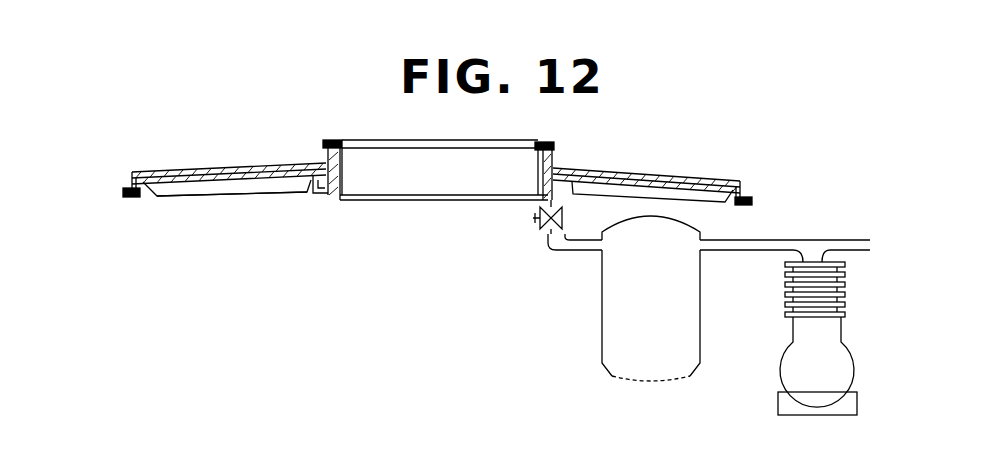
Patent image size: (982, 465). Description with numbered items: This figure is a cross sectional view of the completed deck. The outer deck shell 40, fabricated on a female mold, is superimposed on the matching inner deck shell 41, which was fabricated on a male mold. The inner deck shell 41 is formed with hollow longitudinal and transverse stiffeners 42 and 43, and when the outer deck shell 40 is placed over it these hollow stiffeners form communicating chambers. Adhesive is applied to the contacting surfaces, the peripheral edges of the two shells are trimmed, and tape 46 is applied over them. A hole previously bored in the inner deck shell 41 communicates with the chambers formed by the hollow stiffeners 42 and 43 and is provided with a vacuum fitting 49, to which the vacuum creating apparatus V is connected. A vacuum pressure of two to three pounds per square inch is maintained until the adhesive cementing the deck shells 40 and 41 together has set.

The outer deck shell 40 is at (220, 167).
The inner deck shell 41 is at (208, 182).
The longitudinal stiffener 42 is at (323, 181).
The transverse stiffener 43 is at (258, 193).
The tape 46 is at (132, 200).
The vacuum fitting 49 is at (540, 203).
The vacuum creating apparatus V is at (784, 330).